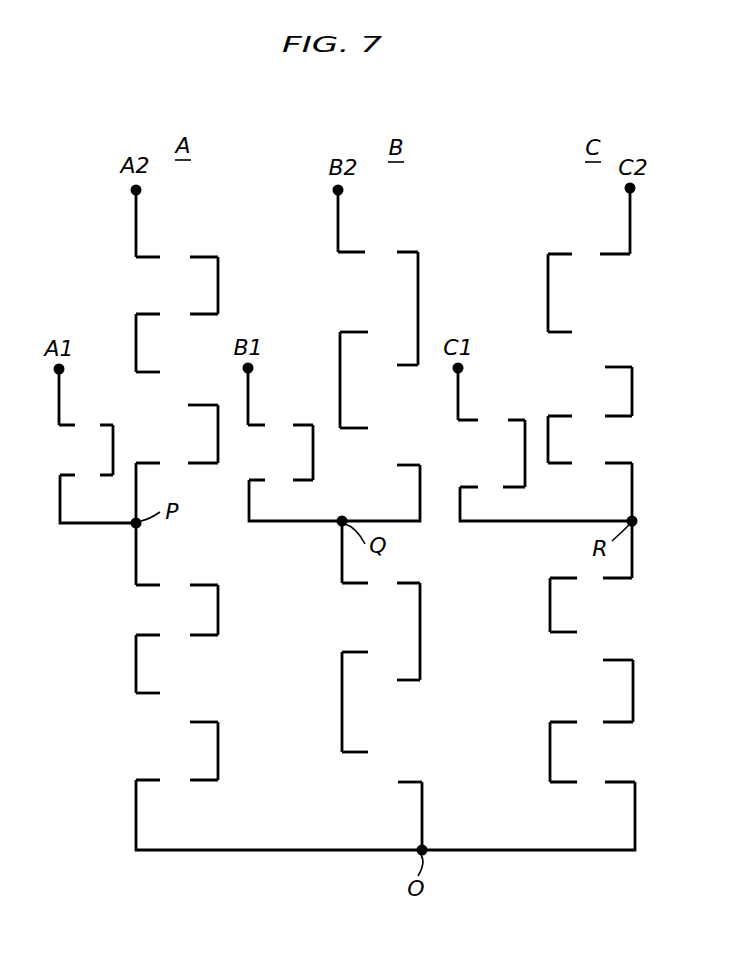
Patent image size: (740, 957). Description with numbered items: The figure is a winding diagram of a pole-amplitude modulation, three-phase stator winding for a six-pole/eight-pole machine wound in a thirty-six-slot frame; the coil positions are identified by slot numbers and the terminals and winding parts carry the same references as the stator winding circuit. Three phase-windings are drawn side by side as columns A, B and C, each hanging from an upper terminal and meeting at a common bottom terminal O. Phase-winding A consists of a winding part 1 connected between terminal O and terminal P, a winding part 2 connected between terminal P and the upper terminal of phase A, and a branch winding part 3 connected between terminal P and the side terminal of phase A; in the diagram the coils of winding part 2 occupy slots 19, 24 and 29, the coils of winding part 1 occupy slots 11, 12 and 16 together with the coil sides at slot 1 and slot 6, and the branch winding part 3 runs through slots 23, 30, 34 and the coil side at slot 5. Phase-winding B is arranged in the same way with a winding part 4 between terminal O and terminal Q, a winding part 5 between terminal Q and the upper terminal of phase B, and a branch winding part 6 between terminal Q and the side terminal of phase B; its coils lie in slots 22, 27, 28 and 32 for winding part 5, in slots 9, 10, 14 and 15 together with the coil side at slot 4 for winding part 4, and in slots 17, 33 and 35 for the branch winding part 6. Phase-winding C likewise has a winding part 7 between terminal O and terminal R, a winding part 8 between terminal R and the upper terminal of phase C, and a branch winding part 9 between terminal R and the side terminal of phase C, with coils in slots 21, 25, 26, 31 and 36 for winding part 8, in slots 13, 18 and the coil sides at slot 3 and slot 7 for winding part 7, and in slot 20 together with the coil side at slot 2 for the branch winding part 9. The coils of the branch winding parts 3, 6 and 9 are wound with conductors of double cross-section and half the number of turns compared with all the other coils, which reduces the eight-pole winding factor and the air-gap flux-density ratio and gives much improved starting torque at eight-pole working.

The winding part 1 is at (236, 733).
The winding part 2 is at (218, 270).
The branch winding part 3 is at (44, 492).
The winding part 4 is at (312, 697).
The winding part 5 is at (441, 275).
The branch winding part 6 is at (328, 464).
The winding part 7 is at (518, 748).
The winding part 8 is at (652, 372).
The branch winding part 9 is at (526, 402).
The slot 10 is at (394, 680).
The slot 11 is at (163, 693).
The slot 12 is at (190, 722).
The slot 13 is at (591, 722).
The slot 14 is at (370, 752).
The slot 15 is at (396, 782).
The slot 16 is at (177, 780).
The slot 17 is at (280, 425).
The slot 18 is at (592, 782).
The slot 19 is at (177, 257).
The slot 20 is at (491, 420).
The slot 21 is at (589, 254).
The slot 22 is at (378, 252).
The slot 23 is at (86, 425).
The slot 24 is at (177, 314).
The slot 25 is at (575, 332).
The slot 26 is at (603, 367).
The slot 27 is at (368, 332).
The slot 28 is at (392, 365).
The slot 29 is at (162, 372).
The slot 30 is at (188, 405).
The slot 31 is at (590, 416).
The slot 32 is at (368, 428).
The slot 33 is at (393, 465).
The slot 34 is at (177, 463).
The slot 35 is at (281, 480).
The slot 36 is at (590, 463).